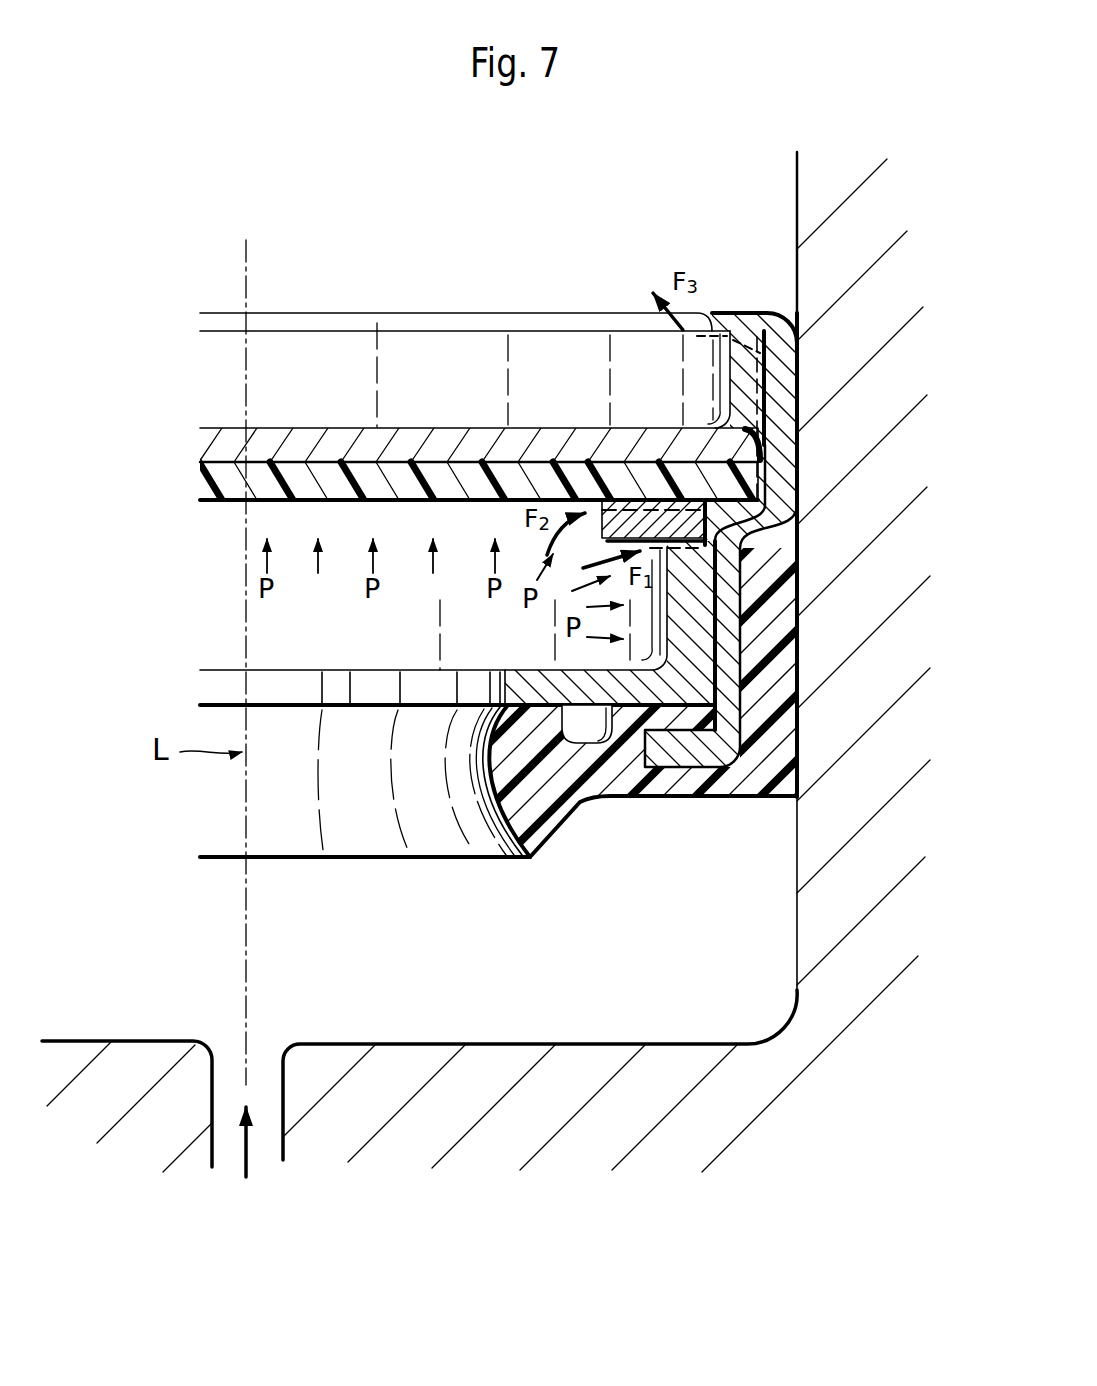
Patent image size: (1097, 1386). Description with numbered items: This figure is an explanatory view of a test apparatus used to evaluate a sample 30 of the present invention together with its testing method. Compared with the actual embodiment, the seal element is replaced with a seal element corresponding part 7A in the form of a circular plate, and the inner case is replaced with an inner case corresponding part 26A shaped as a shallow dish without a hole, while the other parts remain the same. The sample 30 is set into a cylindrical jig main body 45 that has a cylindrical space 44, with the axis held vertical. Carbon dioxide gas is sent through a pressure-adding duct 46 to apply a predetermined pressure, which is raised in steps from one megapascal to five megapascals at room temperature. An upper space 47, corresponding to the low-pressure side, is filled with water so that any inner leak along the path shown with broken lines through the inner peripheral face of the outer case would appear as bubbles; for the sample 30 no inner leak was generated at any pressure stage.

The upper space 47 is at (495, 183).
The inner case corresponding part 26A is at (349, 710).
The sample 30 is at (589, 372).
The seal element corresponding part 7A is at (604, 700).
The cylindrical space 44 is at (667, 914).
The cylindrical jig main body 45 is at (590, 1170).
The pressure-adding duct 46 is at (270, 1093).